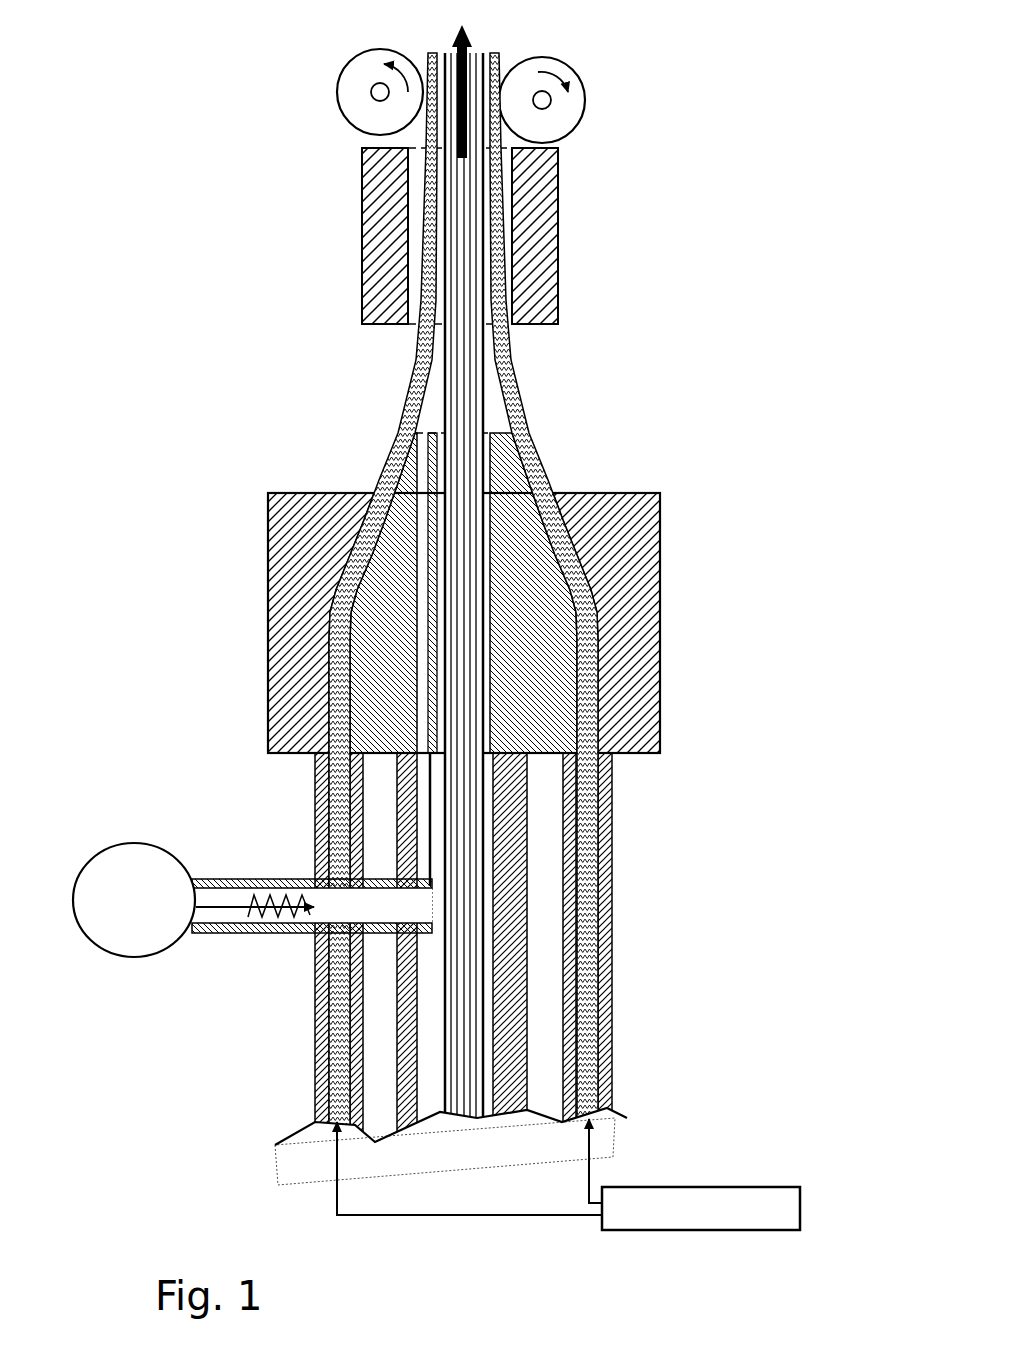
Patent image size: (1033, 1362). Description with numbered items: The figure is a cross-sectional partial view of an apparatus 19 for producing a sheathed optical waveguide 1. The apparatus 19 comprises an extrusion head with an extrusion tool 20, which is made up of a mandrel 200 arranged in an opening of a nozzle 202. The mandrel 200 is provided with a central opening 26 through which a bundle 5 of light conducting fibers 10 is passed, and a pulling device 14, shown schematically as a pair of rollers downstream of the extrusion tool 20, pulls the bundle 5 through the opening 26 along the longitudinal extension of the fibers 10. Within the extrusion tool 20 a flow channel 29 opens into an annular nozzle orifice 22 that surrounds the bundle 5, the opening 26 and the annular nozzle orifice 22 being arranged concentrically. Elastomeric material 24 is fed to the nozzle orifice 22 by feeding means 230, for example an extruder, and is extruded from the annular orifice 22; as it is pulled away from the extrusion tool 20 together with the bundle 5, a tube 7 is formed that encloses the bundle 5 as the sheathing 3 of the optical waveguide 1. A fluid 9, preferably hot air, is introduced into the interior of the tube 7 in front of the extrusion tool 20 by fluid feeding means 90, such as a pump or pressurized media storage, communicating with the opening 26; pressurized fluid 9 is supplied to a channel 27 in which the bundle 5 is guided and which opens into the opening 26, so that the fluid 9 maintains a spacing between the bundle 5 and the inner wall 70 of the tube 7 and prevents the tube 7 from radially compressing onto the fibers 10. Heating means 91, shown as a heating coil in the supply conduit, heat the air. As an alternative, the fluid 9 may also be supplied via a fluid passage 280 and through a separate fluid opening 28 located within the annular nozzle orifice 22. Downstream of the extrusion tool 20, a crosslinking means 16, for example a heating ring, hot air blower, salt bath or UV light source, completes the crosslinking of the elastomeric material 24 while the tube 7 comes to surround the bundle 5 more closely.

The sheathed optical waveguide 1 is at (510, 141).
The sheathing 3 is at (344, 606).
The tube 7 is at (430, 104).
The bundle 5 is at (480, 826).
The fluid 9 is at (243, 908).
The light conducting fibers 10 is at (499, 594).
The pulling device 14 is at (340, 72).
The crosslinking means 16 is at (362, 212).
The apparatus 19 is at (801, 537).
The extrusion tool 20 is at (282, 474).
The annular nozzle orifice 22 is at (385, 495).
The elastomeric material 24 is at (592, 1036).
The opening 26 is at (430, 432).
The channel 27 is at (265, 605).
The fluid opening 28 is at (423, 468).
The flow channel 29 is at (315, 781).
The inner wall 70 is at (604, 606).
The fluid feeding means 90 is at (116, 953).
The heating means 91 is at (278, 913).
The mandrel 200 is at (520, 520).
The nozzle 202 is at (640, 580).
The feeding means 230 is at (712, 1187).
The fluid passage 280 is at (235, 730).